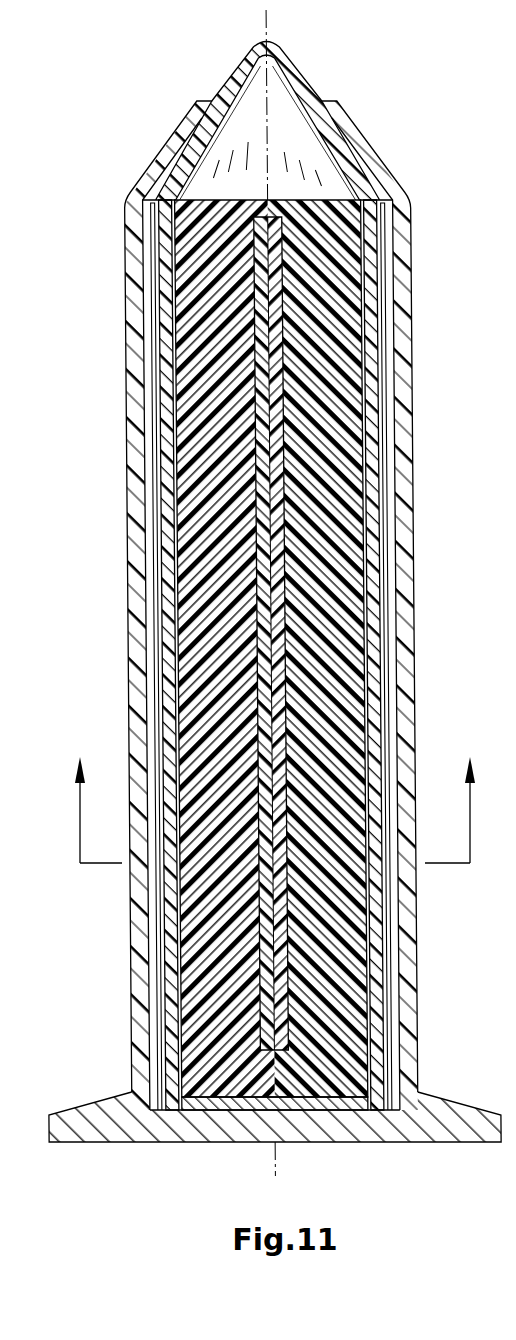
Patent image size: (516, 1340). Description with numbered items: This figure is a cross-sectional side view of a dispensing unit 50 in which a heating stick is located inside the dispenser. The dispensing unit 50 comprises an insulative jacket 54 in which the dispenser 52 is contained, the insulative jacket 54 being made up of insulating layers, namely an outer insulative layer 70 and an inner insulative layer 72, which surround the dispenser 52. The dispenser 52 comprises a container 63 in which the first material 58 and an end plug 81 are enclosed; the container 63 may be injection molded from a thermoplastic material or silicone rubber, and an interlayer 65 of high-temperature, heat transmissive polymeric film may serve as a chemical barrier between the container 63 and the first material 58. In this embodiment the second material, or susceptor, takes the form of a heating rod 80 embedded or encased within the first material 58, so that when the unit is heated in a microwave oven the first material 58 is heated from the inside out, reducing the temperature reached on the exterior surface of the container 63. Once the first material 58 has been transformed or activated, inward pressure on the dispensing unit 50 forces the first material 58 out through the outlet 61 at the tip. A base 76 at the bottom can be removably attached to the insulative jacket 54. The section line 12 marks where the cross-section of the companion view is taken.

The section line 12— 12 is at (276, 796).
The dispensing unit 50 is at (336, 66).
The dispenser 52 is at (363, 182).
The insulative jacket 54 is at (118, 556).
The first material 58 is at (296, 258).
The outlet 61 is at (262, 45).
The container 63 is at (372, 370).
The interlayer 65 is at (360, 732).
The outer insulative layer 70 is at (405, 483).
The inner insulative layer 72 is at (393, 588).
The base 76 is at (473, 1112).
The heating rod 80 is at (262, 410).
The end plug 81 is at (207, 1100).